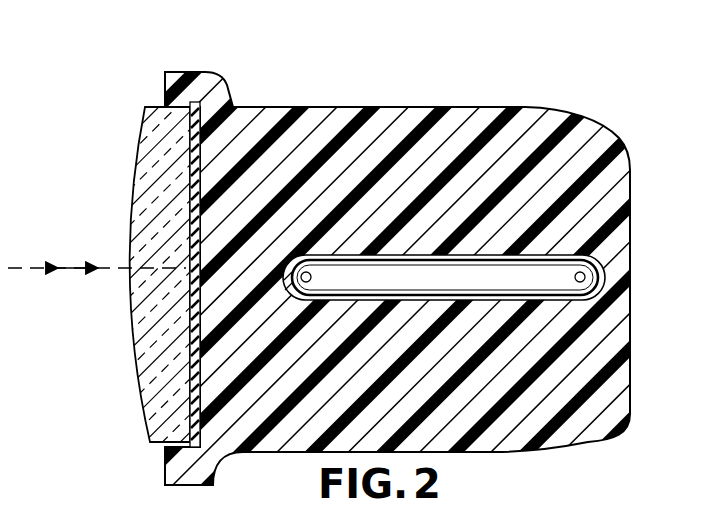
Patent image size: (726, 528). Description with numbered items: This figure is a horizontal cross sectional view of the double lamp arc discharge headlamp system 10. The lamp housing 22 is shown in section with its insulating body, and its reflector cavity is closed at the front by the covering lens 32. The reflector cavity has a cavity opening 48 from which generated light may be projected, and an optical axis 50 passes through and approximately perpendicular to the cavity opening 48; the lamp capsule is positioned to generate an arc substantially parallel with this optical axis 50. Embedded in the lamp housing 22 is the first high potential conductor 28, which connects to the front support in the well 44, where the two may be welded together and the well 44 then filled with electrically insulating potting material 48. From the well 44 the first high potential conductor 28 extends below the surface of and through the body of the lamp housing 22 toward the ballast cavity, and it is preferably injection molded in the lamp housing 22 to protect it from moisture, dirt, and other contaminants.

The arc discharge headlamp system 10 is at (363, 264).
The lamp housing 22 is at (488, 452).
The first high potential conductor 28 is at (452, 253).
The covering lens 32 is at (131, 327).
The well 44 is at (297, 255).
The cavity opening 48 is at (333, 253).
The optical axis 50 is at (97, 246).